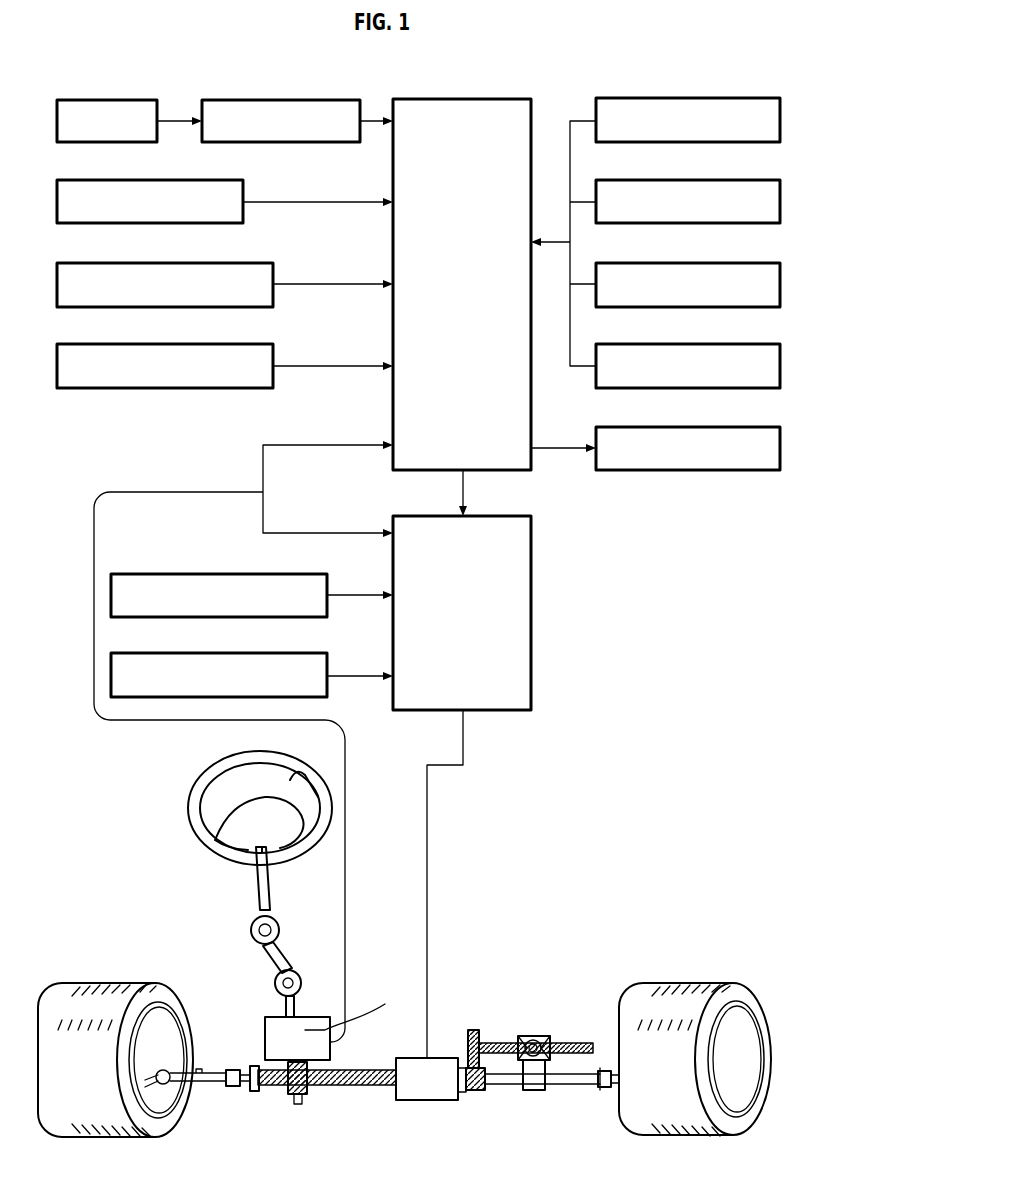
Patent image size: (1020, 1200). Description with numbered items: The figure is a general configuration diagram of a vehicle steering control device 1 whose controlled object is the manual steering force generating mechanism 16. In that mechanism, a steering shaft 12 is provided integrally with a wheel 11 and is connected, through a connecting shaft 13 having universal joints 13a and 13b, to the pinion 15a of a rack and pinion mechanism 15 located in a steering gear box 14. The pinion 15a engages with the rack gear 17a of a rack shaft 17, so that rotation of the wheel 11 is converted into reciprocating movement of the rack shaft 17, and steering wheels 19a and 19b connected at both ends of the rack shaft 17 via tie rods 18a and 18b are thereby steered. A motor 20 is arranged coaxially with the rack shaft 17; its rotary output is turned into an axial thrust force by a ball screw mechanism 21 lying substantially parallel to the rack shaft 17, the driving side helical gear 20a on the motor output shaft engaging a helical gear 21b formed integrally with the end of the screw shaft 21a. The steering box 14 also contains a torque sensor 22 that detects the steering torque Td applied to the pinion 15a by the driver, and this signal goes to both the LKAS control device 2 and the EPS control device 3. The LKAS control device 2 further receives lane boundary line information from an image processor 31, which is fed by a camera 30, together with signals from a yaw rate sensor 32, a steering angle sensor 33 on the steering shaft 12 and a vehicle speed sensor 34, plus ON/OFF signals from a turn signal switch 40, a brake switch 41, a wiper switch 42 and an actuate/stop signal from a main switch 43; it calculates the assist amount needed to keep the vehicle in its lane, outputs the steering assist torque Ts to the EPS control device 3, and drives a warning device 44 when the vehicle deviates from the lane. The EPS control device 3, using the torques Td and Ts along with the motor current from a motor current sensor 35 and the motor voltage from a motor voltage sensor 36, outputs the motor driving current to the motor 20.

The control device of the vehicle 1 is at (620, 80).
The LKAS control device 2 is at (470, 99).
The EPS control device 3 is at (531, 558).
The wheel 11 is at (190, 792).
The steering shaft 12 is at (269, 887).
The connecting shaft 13 is at (271, 962).
The universal joint 13a is at (280, 925).
The universal joint 13b is at (298, 975).
The steering gear box 14 is at (251, 1018).
The rack and pinion mechanism 15 is at (268, 1081).
The pinion 15a is at (287, 1095).
The manual steering force generating mechanism 16 is at (222, 940).
The rack shaft 17 is at (558, 1087).
The rack gear 17a is at (345, 1088).
The tie rod 18a is at (200, 1086).
The tie rod 18b is at (608, 1090).
The steering wheel 19a is at (120, 985).
The steering wheel 19b is at (683, 985).
The motor 20 is at (427, 1100).
The driving side helical gear 20a is at (478, 1092).
The ball screw mechanism 21 is at (533, 1035).
The screw shaft 21a is at (568, 1043).
The helical gear 21b is at (474, 1030).
The torque sensor 22 is at (333, 1053).
The camera 30 is at (125, 100).
The image processor 31 is at (318, 100).
The yaw rate sensor 32 is at (200, 180).
The steering angle sensor 33 is at (228, 263).
The vehicle speed sensor 34 is at (228, 344).
The motor current sensor 35 is at (280, 574).
The motor voltage sensor 36 is at (280, 653).
The turn signal switch 40 is at (726, 98).
The brake switch 41 is at (726, 180).
The wiper switch 42 is at (726, 263).
The main switch 43 is at (726, 344).
The warning device 44 is at (726, 427).